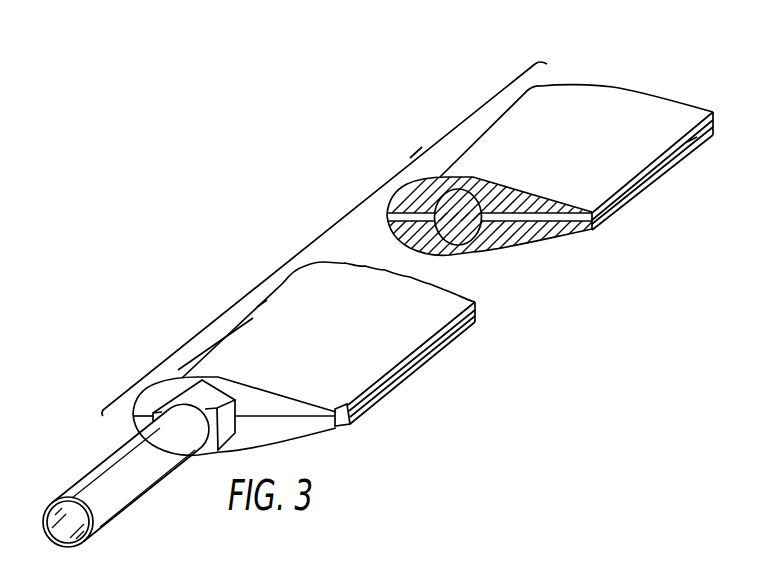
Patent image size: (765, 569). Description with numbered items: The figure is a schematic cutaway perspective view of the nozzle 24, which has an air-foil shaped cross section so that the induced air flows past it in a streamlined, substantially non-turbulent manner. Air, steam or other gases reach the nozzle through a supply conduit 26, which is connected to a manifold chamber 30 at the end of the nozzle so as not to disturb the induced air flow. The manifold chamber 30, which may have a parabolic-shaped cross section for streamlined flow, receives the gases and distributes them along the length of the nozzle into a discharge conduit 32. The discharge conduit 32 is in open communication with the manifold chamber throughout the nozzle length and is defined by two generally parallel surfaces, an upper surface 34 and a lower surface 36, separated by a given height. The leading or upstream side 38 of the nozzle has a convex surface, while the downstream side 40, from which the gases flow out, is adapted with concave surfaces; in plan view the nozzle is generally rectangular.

The airfoil blade assembly 24 is at (568, 74).
The supply conduit 26 is at (84, 478).
The manifold chamber 30 is at (465, 231).
The discharge conduit 32 is at (625, 193).
The upper surface 34 is at (512, 214).
The lower surface 36 is at (540, 219).
The leading or upstream side 38 is at (102, 416).
The downstream side 40 is at (343, 422).